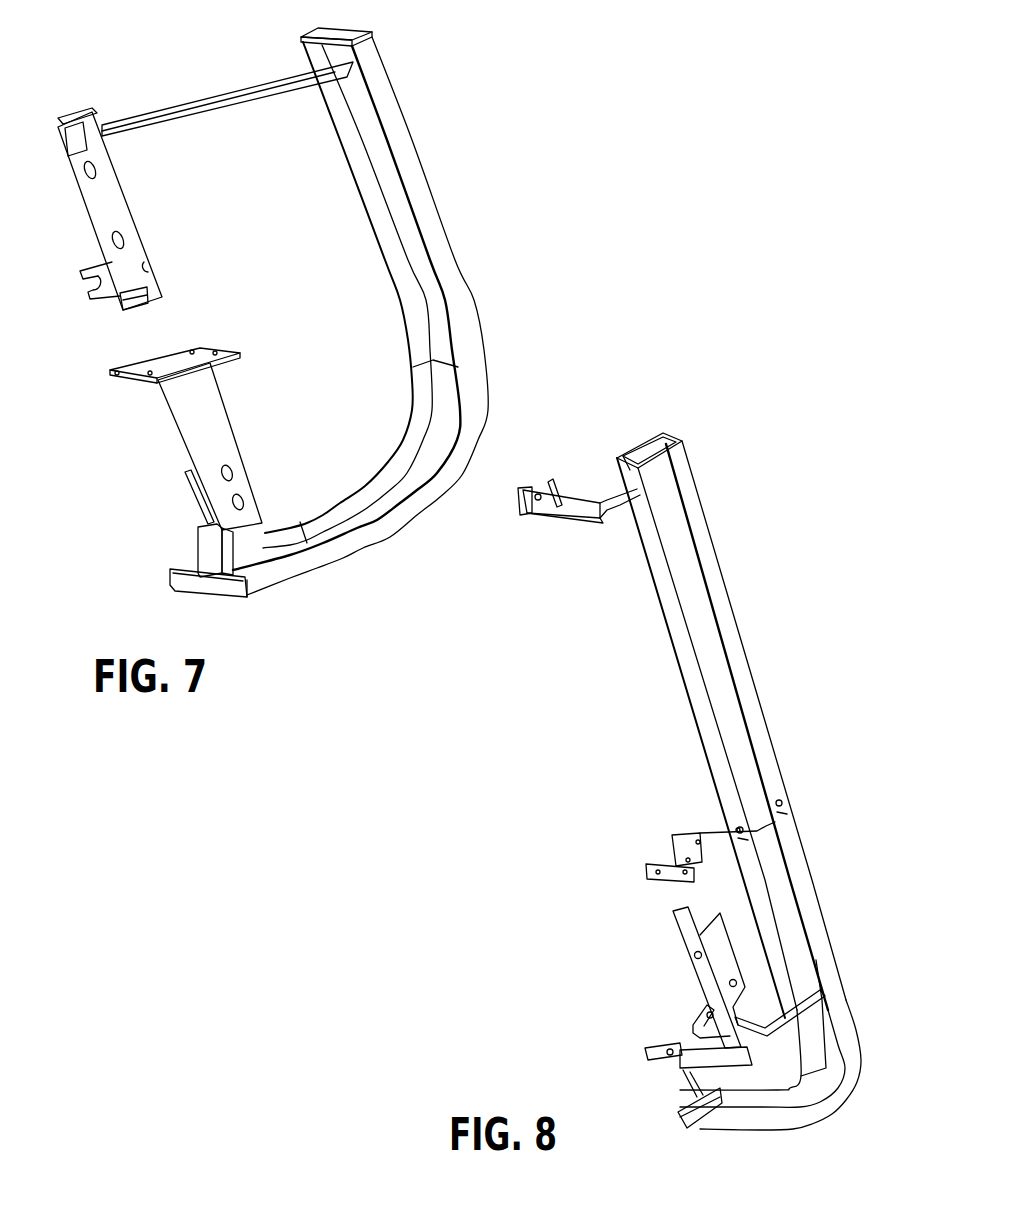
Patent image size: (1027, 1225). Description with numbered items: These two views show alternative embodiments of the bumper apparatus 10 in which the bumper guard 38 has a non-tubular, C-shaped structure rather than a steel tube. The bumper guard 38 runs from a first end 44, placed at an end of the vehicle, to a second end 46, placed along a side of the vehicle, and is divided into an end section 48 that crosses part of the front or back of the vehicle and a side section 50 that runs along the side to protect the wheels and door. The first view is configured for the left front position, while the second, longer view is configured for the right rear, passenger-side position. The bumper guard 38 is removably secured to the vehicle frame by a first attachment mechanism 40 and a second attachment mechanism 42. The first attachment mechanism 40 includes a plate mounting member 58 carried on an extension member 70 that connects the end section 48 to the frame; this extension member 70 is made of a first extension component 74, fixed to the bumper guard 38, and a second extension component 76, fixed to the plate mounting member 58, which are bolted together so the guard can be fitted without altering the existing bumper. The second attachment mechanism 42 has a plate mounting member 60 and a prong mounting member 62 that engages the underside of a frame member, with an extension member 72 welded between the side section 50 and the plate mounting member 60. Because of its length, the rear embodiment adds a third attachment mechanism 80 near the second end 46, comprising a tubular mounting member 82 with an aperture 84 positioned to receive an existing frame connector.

In FIG. 7, the bumper apparatus 10 is at (529, 93).
In FIG. 8, the bumper apparatus 10 is at (799, 492).
In FIG. 7, the bumper guard 38 is at (445, 330).
In FIG. 8, the bumper guard 38 is at (783, 893).
In FIG. 7, the first attachment mechanism 40 is at (142, 477).
In FIG. 8, the first attachment mechanism 40 is at (683, 1042).
In FIG. 7, the second attachment mechanism 42 is at (191, 193).
In FIG. 8, the second attachment mechanism 42 is at (661, 850).
In FIG. 7, the first end 44 is at (250, 588).
In FIG. 8, the first end 44 is at (701, 1110).
In FIG. 7, the second end 46 is at (372, 52).
In FIG. 8, the second end 46 is at (708, 426).
In FIG. 7, the end section 48 is at (345, 555).
In FIG. 8, the end section 48 is at (838, 648).
In FIG. 7, the side section 50 is at (389, 353).
In FIG. 8, the side section 50 is at (743, 780).
In FIG. 7, the plate mounting member 58 is at (175, 355).
In FIG. 8, the plate mounting member 58 is at (720, 968).
In FIG. 7, the plate mounting member 60 is at (96, 233).
In FIG. 8, the plate mounting member 60 is at (680, 840).
In FIG. 7, the prong mounting member 62 is at (104, 300).
In FIG. 7, the extension member 70 is at (162, 447).
In FIG. 7, the extension member 72 is at (152, 128).
In FIG. 7, the first extension component 74 is at (208, 548).
In FIG. 7, the second extension component 76 is at (215, 420).
In FIG. 8, the third attachment mechanism 80 is at (579, 518).
In FIG. 8, the tubular mounting member 82 is at (572, 502).
In FIG. 8, the aperture 84 is at (536, 486).